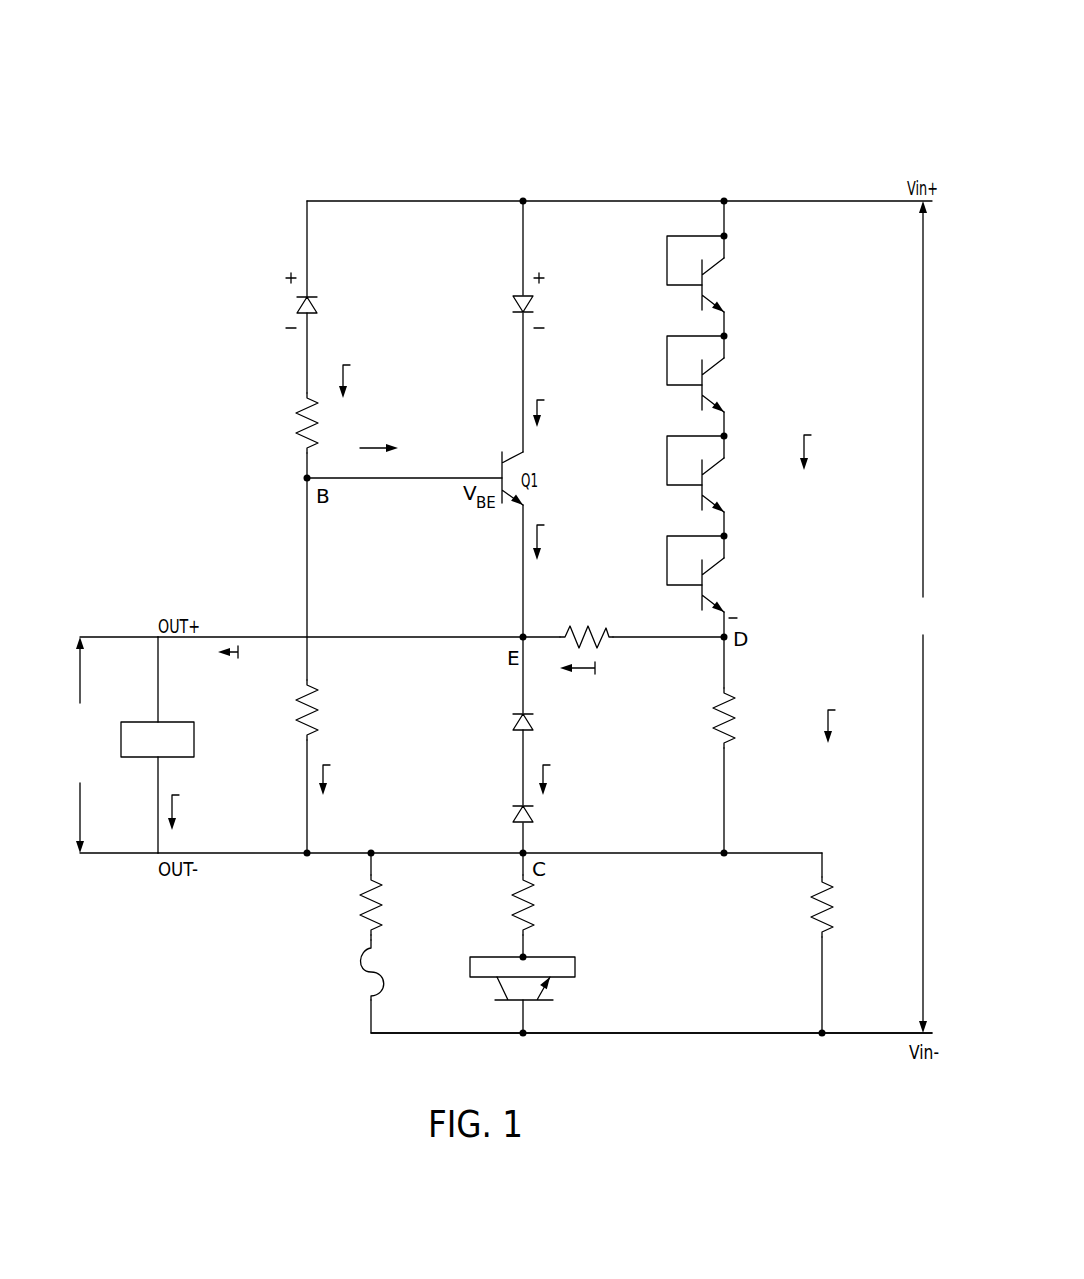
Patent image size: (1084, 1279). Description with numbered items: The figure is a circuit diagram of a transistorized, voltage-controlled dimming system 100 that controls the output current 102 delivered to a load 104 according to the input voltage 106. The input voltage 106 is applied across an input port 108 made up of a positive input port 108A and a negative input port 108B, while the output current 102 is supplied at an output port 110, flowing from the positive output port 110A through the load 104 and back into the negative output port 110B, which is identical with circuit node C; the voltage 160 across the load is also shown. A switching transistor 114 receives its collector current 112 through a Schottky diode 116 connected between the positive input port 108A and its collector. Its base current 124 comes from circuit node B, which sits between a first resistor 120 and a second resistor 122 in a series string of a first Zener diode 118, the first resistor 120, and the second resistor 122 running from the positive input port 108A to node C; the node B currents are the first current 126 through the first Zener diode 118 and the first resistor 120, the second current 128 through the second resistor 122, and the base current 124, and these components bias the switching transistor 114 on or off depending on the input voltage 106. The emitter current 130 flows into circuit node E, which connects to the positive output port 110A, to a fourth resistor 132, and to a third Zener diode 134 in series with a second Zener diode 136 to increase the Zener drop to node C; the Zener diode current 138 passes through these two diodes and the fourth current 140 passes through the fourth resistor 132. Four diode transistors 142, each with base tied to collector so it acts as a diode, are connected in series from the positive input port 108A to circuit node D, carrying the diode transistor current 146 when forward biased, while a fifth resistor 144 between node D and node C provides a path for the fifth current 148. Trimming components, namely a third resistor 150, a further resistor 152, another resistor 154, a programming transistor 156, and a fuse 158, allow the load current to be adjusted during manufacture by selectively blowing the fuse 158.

The system 100 is at (260, 125).
The output current 102 is at (243, 653).
The load 104 is at (196, 740).
The input voltage 106 is at (923, 288).
The input port 108 is at (883, 132).
The positive input port 108A is at (803, 201).
The negative input port 108B is at (838, 1036).
The output port 110 is at (112, 600).
The positive output port 110A is at (262, 637).
The negative output port 110B is at (235, 855).
The collector current 112 is at (541, 408).
The switching transistor Q1 114 is at (500, 462).
The diode D3sh 116 is at (520, 293).
The Zener diode D1z 118 is at (320, 302).
The resistor R1 120 is at (305, 398).
The resistor R2 122 is at (312, 692).
The base current 124 is at (370, 448).
The current I1 126 is at (349, 366).
The current I2 128 is at (330, 765).
The emitter current 130 is at (545, 537).
The resistor R4 132 is at (568, 630).
The Zener diode D3z 134 is at (512, 724).
The Zener diode D2z 136 is at (512, 816).
The Zener diode current 138 is at (547, 767).
The current I4 140 is at (590, 673).
The diode transistors Q2, Q3, Q4, and Q5 142 is at (700, 296).
The resistor R5 144 is at (736, 722).
The diode transistor current 146 is at (806, 437).
The current I5 148 is at (830, 712).
The resistor R3 150 is at (813, 898).
The resistor R3a 152 is at (512, 890).
The resistor R3b 154 is at (362, 906).
The transistor Qprogram 156 is at (578, 967).
The fuse 158 is at (360, 966).
The voltage V_L 160 is at (82, 797).